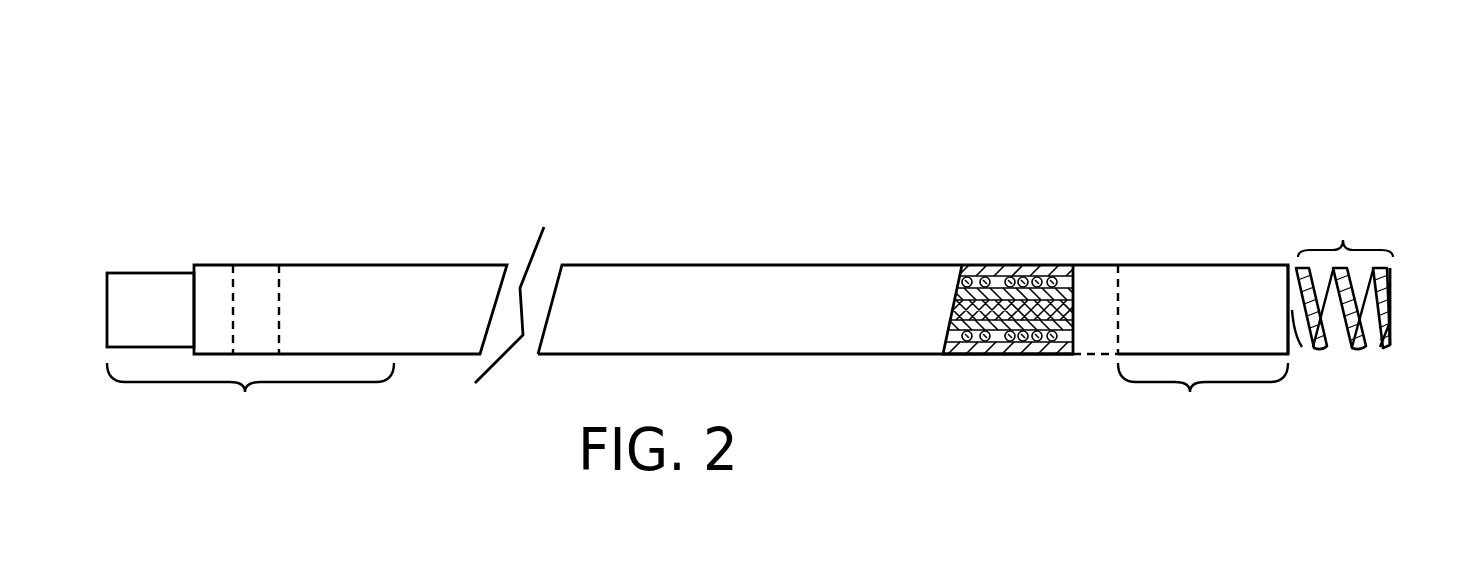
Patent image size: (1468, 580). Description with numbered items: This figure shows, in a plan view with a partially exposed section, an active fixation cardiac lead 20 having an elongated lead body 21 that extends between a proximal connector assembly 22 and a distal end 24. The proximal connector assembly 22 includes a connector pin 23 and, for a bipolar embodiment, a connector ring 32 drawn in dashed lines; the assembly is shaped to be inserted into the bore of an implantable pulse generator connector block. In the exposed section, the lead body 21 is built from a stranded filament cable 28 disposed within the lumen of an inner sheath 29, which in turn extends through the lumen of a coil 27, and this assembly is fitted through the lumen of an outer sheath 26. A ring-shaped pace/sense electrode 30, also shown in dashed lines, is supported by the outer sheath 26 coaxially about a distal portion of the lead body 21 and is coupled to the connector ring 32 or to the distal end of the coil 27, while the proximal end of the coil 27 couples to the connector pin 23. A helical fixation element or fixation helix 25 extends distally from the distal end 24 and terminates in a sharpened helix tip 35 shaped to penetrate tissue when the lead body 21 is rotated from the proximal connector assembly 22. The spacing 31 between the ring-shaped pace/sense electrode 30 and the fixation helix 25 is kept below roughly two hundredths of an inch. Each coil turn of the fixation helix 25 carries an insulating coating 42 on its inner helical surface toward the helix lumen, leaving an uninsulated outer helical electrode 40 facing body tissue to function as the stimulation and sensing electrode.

The cardiac lead 20 is at (678, 140).
The lead body 21 is at (813, 277).
The proximal connector assembly 22 is at (250, 393).
The connector pin 23 is at (135, 288).
The distal end 24 is at (1298, 265).
The fixation helix 25 is at (1362, 307).
The outer sheath 26 is at (974, 272).
The coil 27 is at (978, 345).
The cable 28 is at (1046, 345).
The inner sheath 29 is at (1033, 272).
The ring-shaped pace/sense electrode 30 is at (1092, 277).
The spacing 31 is at (1203, 393).
The connector ring 32 is at (255, 278).
The helix tip 35 is at (1393, 327).
The outer helical electrode 40 is at (1356, 347).
The insulating coating 42 is at (1310, 313).